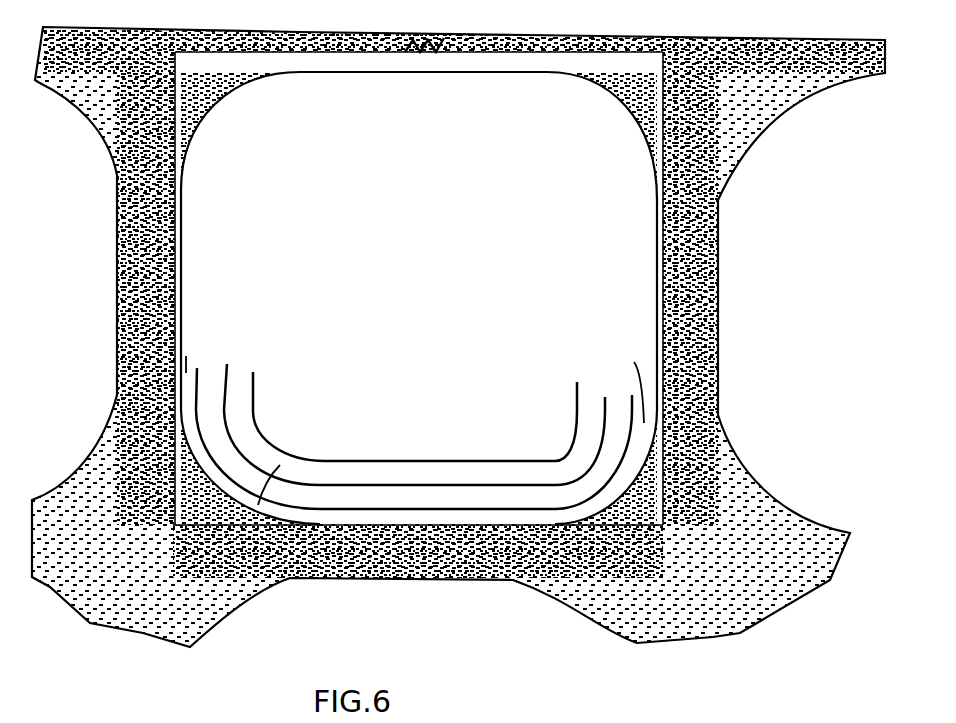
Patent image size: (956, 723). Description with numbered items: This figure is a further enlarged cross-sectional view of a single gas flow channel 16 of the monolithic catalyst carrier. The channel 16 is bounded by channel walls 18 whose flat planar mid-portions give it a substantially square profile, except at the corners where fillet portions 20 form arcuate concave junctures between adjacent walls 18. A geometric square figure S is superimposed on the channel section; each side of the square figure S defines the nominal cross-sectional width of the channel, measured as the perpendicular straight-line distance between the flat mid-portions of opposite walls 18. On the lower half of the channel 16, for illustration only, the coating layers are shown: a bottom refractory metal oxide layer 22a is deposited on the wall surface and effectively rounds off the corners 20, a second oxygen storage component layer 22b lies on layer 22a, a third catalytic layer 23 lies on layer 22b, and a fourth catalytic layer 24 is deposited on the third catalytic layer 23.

The gas flow channel 16 is at (92, 316).
The wall 18 is at (182, 278).
The fillet portion 20 is at (245, 90).
The bottom refractory metal oxide layer 22a is at (187, 355).
The second oxygen storage component layer 22b is at (197, 368).
The third catalytic layer 23 is at (228, 364).
The fourth catalytic layer 24 is at (256, 372).
The geometric square figure S is at (738, 165).